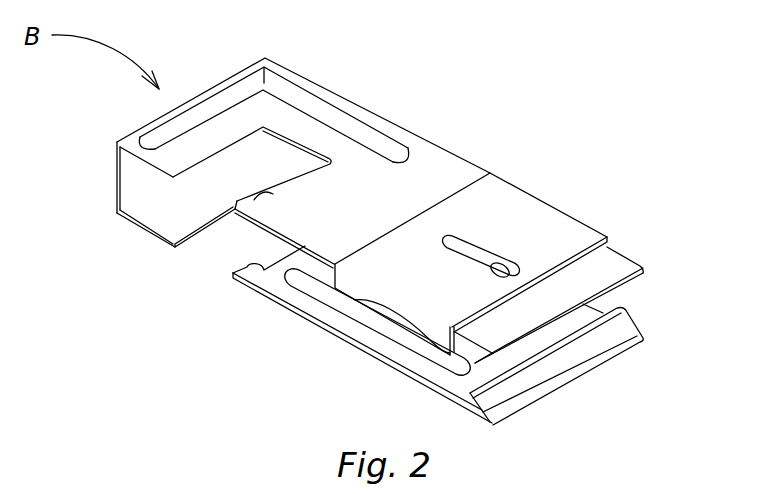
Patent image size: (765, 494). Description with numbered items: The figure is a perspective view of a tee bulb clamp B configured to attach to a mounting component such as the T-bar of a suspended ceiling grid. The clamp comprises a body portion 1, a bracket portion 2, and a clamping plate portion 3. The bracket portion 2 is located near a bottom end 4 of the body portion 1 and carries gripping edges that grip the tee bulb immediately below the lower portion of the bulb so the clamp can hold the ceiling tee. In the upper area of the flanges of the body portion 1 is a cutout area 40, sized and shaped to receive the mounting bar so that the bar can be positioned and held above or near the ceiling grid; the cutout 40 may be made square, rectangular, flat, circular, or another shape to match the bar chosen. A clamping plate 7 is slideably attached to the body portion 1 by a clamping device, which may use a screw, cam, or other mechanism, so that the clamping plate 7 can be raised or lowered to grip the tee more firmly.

The body portion 1 is at (347, 100).
The cutout area 40 is at (210, 200).
The bracket portion 2 is at (628, 225).
The clamping plate portion 3 is at (512, 213).
The bottom end 4 is at (582, 273).
The clamping plate 7 is at (412, 262).